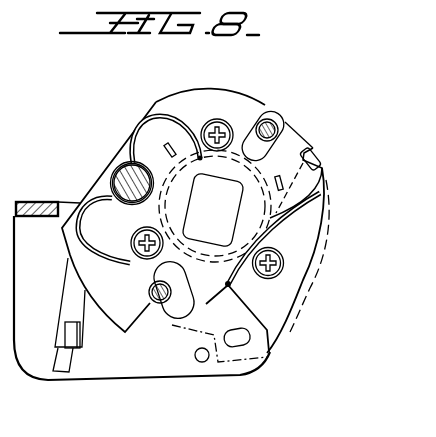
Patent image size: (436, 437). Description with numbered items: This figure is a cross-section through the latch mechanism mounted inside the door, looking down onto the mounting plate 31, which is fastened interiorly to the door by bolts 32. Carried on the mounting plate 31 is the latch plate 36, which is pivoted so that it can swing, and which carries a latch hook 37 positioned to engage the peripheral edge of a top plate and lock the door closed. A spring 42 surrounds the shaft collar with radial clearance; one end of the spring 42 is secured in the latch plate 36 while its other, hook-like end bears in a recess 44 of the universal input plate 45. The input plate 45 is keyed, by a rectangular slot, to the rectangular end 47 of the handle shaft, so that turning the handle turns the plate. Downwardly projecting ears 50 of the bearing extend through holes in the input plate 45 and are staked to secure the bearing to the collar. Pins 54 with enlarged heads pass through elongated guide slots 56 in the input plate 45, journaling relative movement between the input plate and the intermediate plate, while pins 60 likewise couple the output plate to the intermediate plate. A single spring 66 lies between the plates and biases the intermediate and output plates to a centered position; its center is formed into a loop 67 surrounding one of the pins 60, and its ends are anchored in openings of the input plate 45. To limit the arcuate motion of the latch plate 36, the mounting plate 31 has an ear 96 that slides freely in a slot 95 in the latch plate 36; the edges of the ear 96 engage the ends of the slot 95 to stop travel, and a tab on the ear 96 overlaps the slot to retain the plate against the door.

The mounting plate 31 is at (290, 318).
The bolts 32 is at (211, 121).
The latch plate 36 is at (103, 380).
The latch hook 37 is at (37, 203).
The spring 42 is at (277, 222).
The recess 44 is at (316, 156).
The universal input plate 45 is at (220, 90).
The rectangular end of shaft 47 is at (214, 204).
The ears 50 is at (170, 148).
The pins 54 is at (277, 122).
The elongated guide slots 56 is at (252, 148).
The pins 60 is at (122, 182).
The spring 66 is at (86, 214).
The loop 67 is at (120, 170).
The slot 95 is at (68, 280).
The ear 96 is at (65, 334).